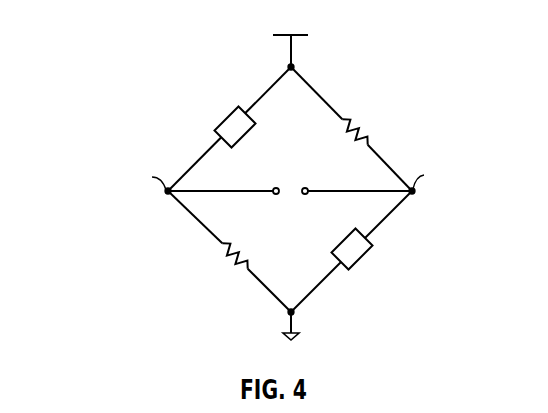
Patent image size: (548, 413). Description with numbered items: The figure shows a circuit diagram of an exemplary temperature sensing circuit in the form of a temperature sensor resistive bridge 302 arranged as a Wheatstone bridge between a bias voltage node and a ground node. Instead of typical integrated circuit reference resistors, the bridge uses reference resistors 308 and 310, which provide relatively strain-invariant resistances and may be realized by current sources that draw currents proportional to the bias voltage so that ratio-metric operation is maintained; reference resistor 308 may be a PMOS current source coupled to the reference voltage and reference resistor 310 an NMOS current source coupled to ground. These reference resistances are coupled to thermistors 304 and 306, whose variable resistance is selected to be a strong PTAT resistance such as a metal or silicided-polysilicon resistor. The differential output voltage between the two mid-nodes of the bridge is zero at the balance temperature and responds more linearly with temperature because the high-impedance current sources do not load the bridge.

The temperature sensor resistive bridge 302 is at (105, 68).
The thermistor 304 is at (366, 143).
The thermistor 306 is at (222, 249).
The reference resistor 308 is at (217, 130).
The reference resistor 310 is at (375, 244).